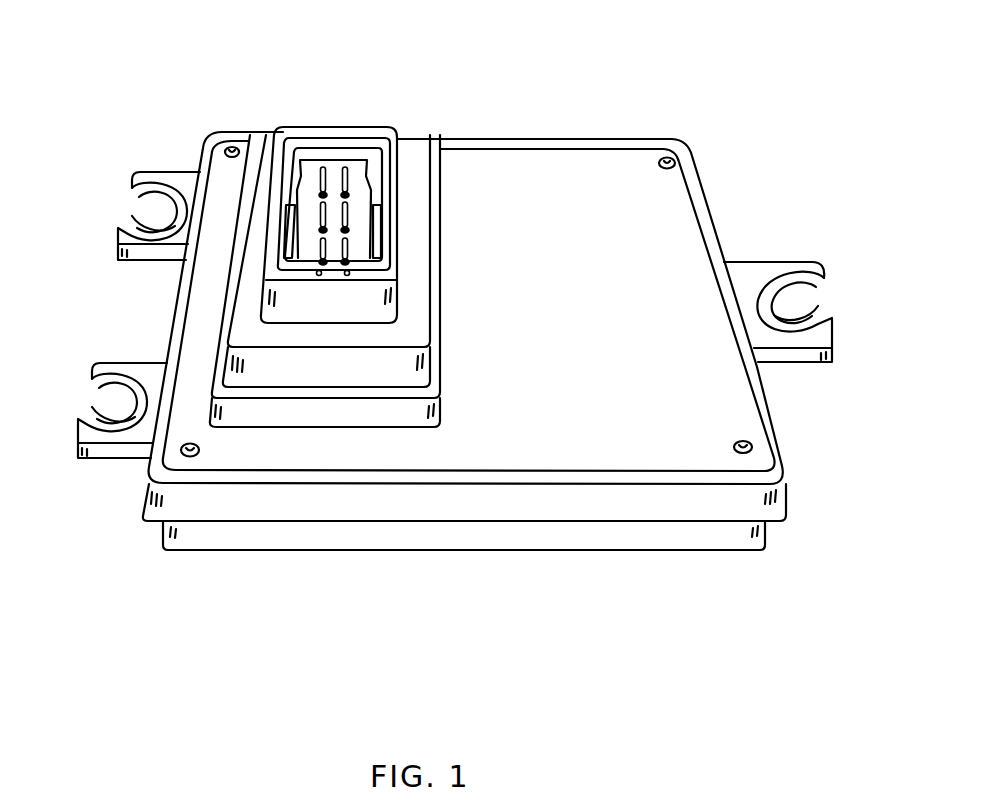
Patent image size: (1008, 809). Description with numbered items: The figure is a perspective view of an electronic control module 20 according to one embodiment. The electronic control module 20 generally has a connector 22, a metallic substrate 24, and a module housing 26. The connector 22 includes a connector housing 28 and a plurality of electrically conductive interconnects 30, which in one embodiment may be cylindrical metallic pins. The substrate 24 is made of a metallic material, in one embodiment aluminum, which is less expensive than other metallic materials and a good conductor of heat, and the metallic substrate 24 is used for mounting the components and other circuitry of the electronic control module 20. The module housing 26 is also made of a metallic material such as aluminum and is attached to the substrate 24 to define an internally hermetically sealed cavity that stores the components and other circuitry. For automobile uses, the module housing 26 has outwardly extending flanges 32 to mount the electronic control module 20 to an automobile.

The electronic control module 20 is at (744, 63).
The connector 22 is at (357, 252).
The metallic substrate 24 is at (745, 389).
The module housing 26 is at (752, 551).
The connector housing 28 is at (413, 263).
The electrically conductive interconnects 30 is at (347, 160).
The outwardly extending flanges 32 is at (147, 178).